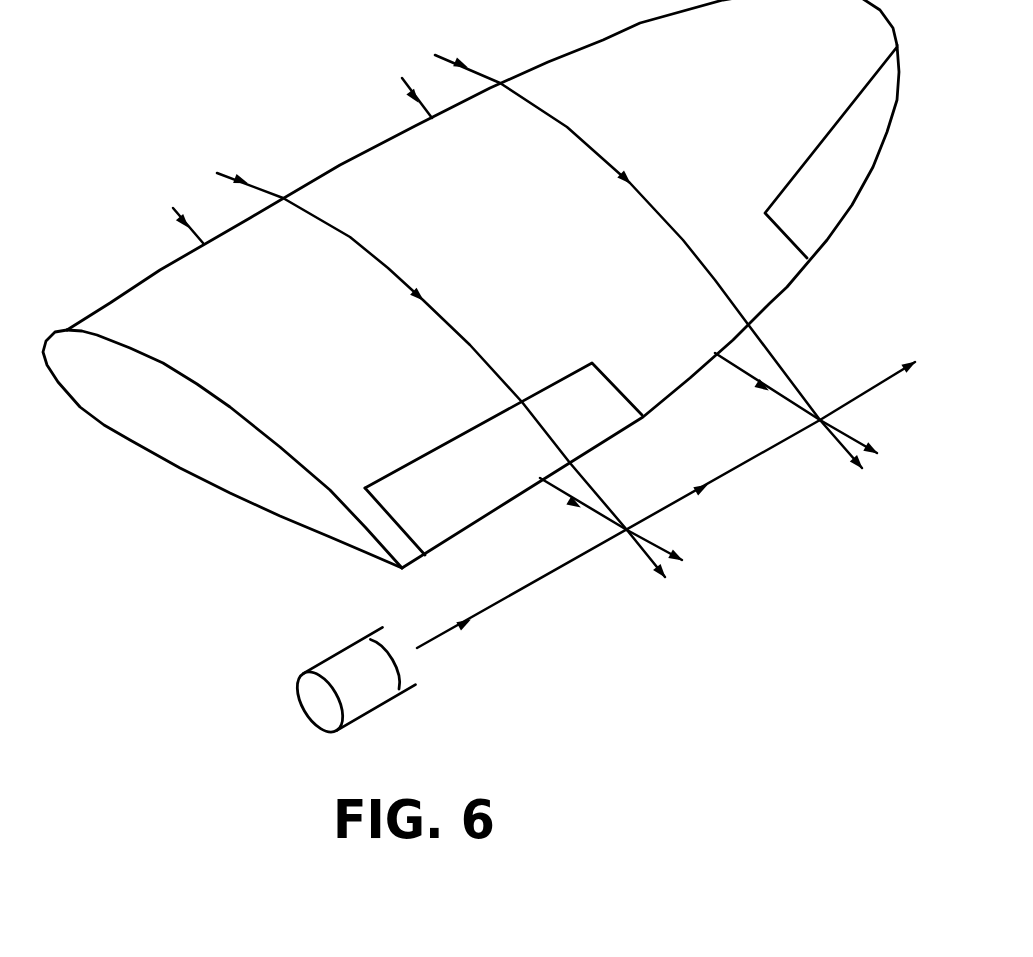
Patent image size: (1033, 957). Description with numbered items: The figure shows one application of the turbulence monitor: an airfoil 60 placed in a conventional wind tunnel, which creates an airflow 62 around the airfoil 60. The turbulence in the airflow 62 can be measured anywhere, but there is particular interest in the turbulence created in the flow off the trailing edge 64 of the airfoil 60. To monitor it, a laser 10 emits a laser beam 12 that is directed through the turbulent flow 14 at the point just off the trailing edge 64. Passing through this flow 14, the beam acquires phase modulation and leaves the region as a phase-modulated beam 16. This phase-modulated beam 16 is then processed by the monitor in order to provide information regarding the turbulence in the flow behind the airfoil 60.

The laser 10 is at (370, 685).
The laser beam 12 is at (503, 598).
The flow 14 is at (647, 547).
The phase-modulated beam 16 is at (883, 383).
The airfoil 60 is at (160, 425).
The airflow 62 is at (350, 237).
The trailing edge 64 is at (677, 391).